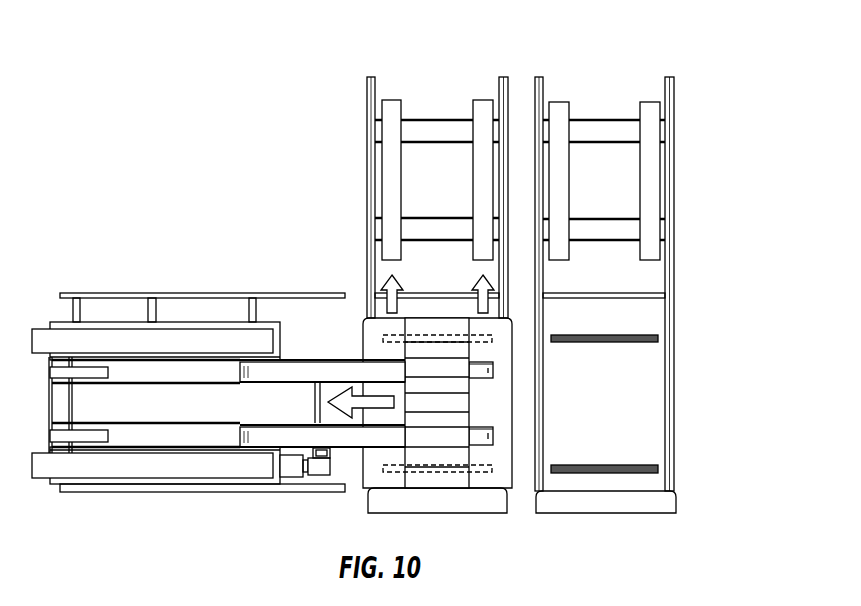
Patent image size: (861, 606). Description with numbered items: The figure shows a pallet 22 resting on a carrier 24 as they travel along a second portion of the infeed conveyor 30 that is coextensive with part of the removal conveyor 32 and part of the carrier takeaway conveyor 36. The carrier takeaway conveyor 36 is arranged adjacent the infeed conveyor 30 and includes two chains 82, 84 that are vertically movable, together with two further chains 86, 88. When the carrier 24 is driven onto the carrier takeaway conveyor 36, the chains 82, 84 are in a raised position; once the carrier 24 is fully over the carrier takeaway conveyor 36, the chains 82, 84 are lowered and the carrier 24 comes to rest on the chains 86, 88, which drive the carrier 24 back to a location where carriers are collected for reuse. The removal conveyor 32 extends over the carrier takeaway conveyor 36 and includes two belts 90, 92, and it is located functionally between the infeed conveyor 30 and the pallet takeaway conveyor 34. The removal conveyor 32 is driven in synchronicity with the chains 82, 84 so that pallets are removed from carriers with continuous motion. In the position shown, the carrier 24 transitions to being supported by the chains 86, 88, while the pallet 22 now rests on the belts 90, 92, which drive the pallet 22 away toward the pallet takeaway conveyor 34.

The pallet 22 is at (437, 485).
The carrier 24 is at (502, 475).
The infeed conveyor 30 is at (693, 247).
The removal conveyor 32 is at (421, 397).
The pallet takeaway conveyor 34 is at (218, 396).
The carrier takeaway conveyor 36 is at (408, 168).
The chain 82 is at (388, 337).
The chain 84 is at (385, 468).
The chain 86 is at (504, 88).
The chain 88 is at (367, 88).
The belt 90 is at (258, 372).
The belt 92 is at (258, 437).